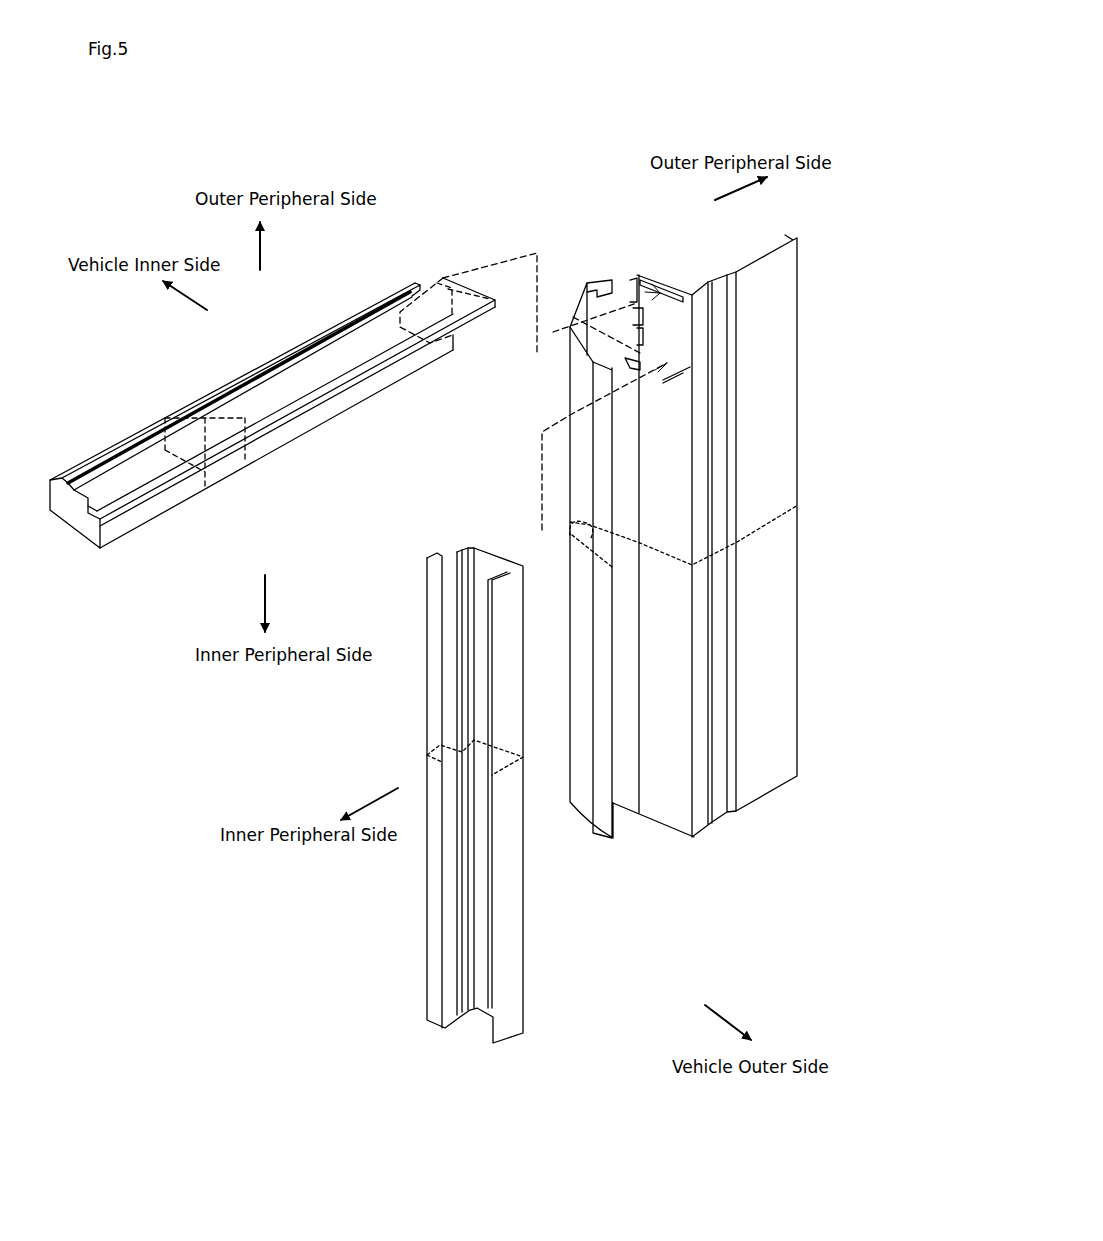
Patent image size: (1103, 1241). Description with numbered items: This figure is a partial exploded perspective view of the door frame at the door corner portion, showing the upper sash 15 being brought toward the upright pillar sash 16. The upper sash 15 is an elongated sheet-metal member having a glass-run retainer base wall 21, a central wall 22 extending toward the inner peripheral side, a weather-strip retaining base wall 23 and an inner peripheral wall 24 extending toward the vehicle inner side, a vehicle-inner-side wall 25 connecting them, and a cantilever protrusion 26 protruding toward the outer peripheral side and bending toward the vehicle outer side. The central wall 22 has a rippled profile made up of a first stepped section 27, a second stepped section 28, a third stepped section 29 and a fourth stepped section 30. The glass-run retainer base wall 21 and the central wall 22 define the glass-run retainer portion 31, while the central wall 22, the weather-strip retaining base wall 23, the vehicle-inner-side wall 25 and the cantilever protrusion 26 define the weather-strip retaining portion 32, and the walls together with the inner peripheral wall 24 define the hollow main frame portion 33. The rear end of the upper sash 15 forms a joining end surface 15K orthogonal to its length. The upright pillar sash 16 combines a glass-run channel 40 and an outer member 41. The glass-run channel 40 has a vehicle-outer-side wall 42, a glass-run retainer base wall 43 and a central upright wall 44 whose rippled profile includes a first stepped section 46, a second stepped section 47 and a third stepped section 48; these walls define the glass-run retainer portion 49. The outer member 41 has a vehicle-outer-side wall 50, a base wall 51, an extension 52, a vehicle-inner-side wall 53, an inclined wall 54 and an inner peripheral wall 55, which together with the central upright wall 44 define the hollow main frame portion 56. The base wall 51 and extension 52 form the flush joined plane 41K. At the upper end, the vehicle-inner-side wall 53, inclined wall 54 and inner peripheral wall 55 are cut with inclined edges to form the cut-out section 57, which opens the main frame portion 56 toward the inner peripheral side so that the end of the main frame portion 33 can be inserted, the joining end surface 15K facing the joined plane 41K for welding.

The upper sash 15 is at (273, 427).
The joining end surface 15K is at (455, 332).
The upright pillar sash 16 is at (626, 605).
The glass-run retainer base wall 21 is at (287, 385).
The central wall 22 is at (200, 560).
The weather-strip retaining base wall 23 is at (62, 503).
The inner peripheral wall 24 is at (78, 525).
The vehicle-inner-side wall 25 is at (56, 495).
The cantilever protrusion 26 is at (130, 463).
The first stepped section 27 is at (96, 505).
The second stepped section 28 is at (98, 508).
The third stepped section 29 is at (100, 516).
The fourth stepped section 30 is at (100, 525).
The glass-run retainer portion 31 is at (222, 458).
The weather-strip retaining portion 32 is at (80, 492).
The main frame portion 33 is at (90, 549).
The glass-run channel 40 is at (512, 816).
The outer member 41 is at (674, 578).
The joined plane 41K is at (668, 325).
The vehicle-outer-side wall 42 is at (512, 935).
The glass-run retainer base wall 43 is at (483, 568).
The central upright wall 44 is at (470, 1090).
The first stepped section 46 is at (474, 1008).
The second stepped section 47 is at (462, 1012).
The third stepped section 48 is at (447, 1007).
The glass-run retainer portion 49 is at (481, 1020).
The vehicle-outer-side wall 50 is at (772, 760).
The base wall 51 is at (672, 806).
The extension 52 is at (628, 792).
The vehicle-inner-side wall 53 is at (663, 560).
The inclined wall 54 is at (585, 798).
The inner peripheral wall 55 is at (604, 815).
The main frame portion 56 is at (565, 628).
The cut-out section 57 is at (587, 300).